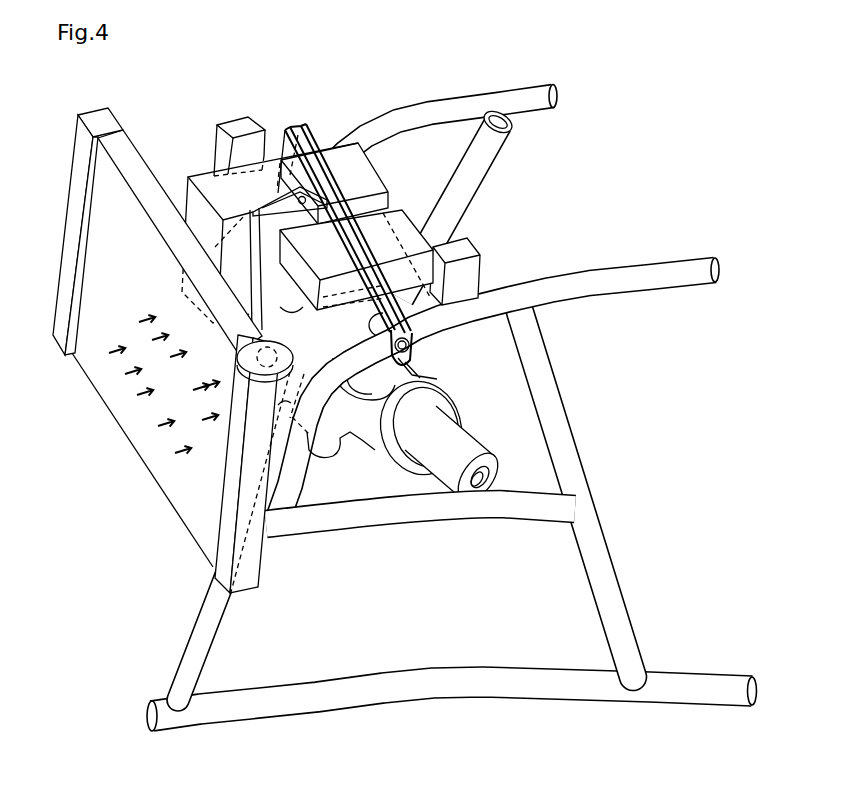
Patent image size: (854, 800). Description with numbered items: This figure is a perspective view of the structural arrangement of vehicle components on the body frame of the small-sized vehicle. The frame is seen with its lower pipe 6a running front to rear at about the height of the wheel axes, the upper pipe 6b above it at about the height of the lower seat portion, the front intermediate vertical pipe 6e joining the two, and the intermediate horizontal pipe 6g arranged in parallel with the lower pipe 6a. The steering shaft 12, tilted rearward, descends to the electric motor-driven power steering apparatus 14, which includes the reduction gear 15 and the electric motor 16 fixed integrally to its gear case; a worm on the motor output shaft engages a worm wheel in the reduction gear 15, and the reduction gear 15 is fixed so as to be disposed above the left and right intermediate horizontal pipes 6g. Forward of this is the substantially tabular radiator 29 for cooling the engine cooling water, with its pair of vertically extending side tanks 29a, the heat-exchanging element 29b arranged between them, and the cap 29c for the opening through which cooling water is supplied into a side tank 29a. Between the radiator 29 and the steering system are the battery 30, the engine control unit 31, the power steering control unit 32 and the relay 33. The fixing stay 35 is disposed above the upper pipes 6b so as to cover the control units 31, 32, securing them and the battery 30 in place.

The lower pipe 6a is at (493, 670).
The upper pipe 6b is at (509, 88).
The intermediate vertical pipe 6e is at (561, 385).
The intermediate horizontal pipe 6g is at (500, 517).
The steering shaft 12 is at (504, 160).
The electric motor-driven power steering apparatus 14 is at (426, 371).
The reduction gear 15 is at (345, 425).
The electric motor 16 is at (465, 423).
The radiator 29 is at (103, 412).
The side tank 29a is at (62, 239).
The element 29b is at (150, 418).
The cap 29c is at (238, 360).
The battery 30 is at (191, 175).
The engine control unit 31 is at (262, 180).
The power steering control unit 32 is at (433, 210).
The relay 33 is at (236, 117).
The fixing stay 35 is at (312, 124).